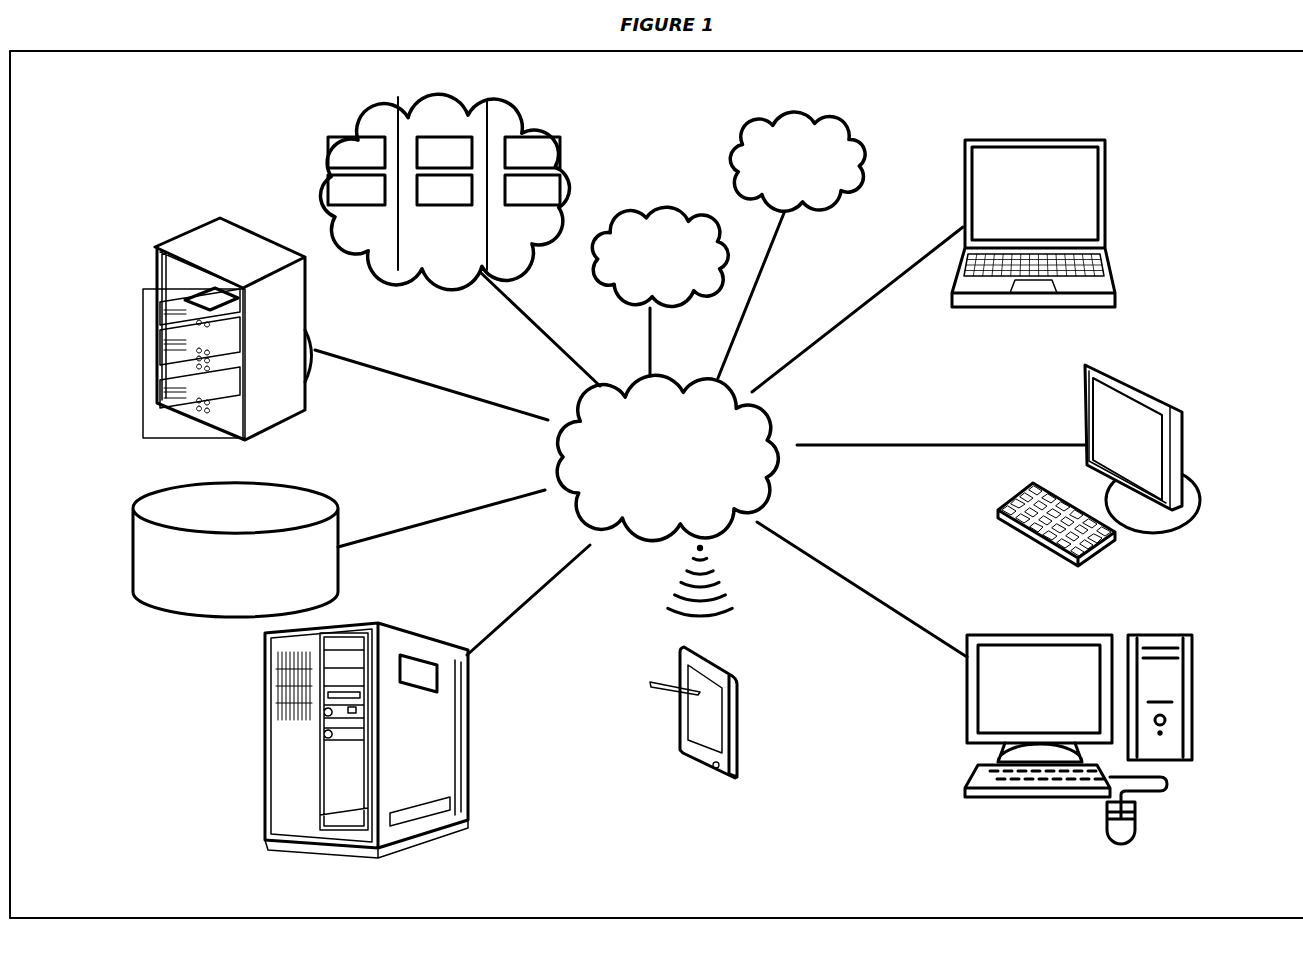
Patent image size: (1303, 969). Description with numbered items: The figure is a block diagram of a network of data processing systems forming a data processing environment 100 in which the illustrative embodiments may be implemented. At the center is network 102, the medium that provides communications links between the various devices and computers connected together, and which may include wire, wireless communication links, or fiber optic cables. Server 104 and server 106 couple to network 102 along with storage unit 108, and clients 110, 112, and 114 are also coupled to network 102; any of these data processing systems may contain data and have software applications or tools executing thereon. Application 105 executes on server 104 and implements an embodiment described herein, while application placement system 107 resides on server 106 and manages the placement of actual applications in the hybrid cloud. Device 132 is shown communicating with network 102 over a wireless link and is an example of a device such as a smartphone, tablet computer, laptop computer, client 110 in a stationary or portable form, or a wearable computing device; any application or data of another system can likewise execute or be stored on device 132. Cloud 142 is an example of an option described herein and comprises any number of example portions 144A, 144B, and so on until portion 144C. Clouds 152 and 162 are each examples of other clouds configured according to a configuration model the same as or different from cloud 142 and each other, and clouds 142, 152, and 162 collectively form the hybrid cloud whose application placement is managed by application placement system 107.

The data processing environment 100 is at (61, 91).
The network 102 is at (650, 477).
The server 104 is at (260, 461).
The application 105 is at (188, 288).
The server 106 is at (389, 886).
The application placement system 107 is at (437, 673).
The storage unit 108 is at (218, 587).
The client 110 is at (1228, 554).
The client 112 is at (1072, 694).
The client 114 is at (1070, 203).
The device 132 is at (738, 816).
The cloud 142 is at (444, 214).
The portion 144A is at (332, 231).
The portion 144B is at (420, 231).
The portion 144C is at (510, 231).
The cloud 152 is at (641, 266).
The cloud 162 is at (779, 171).